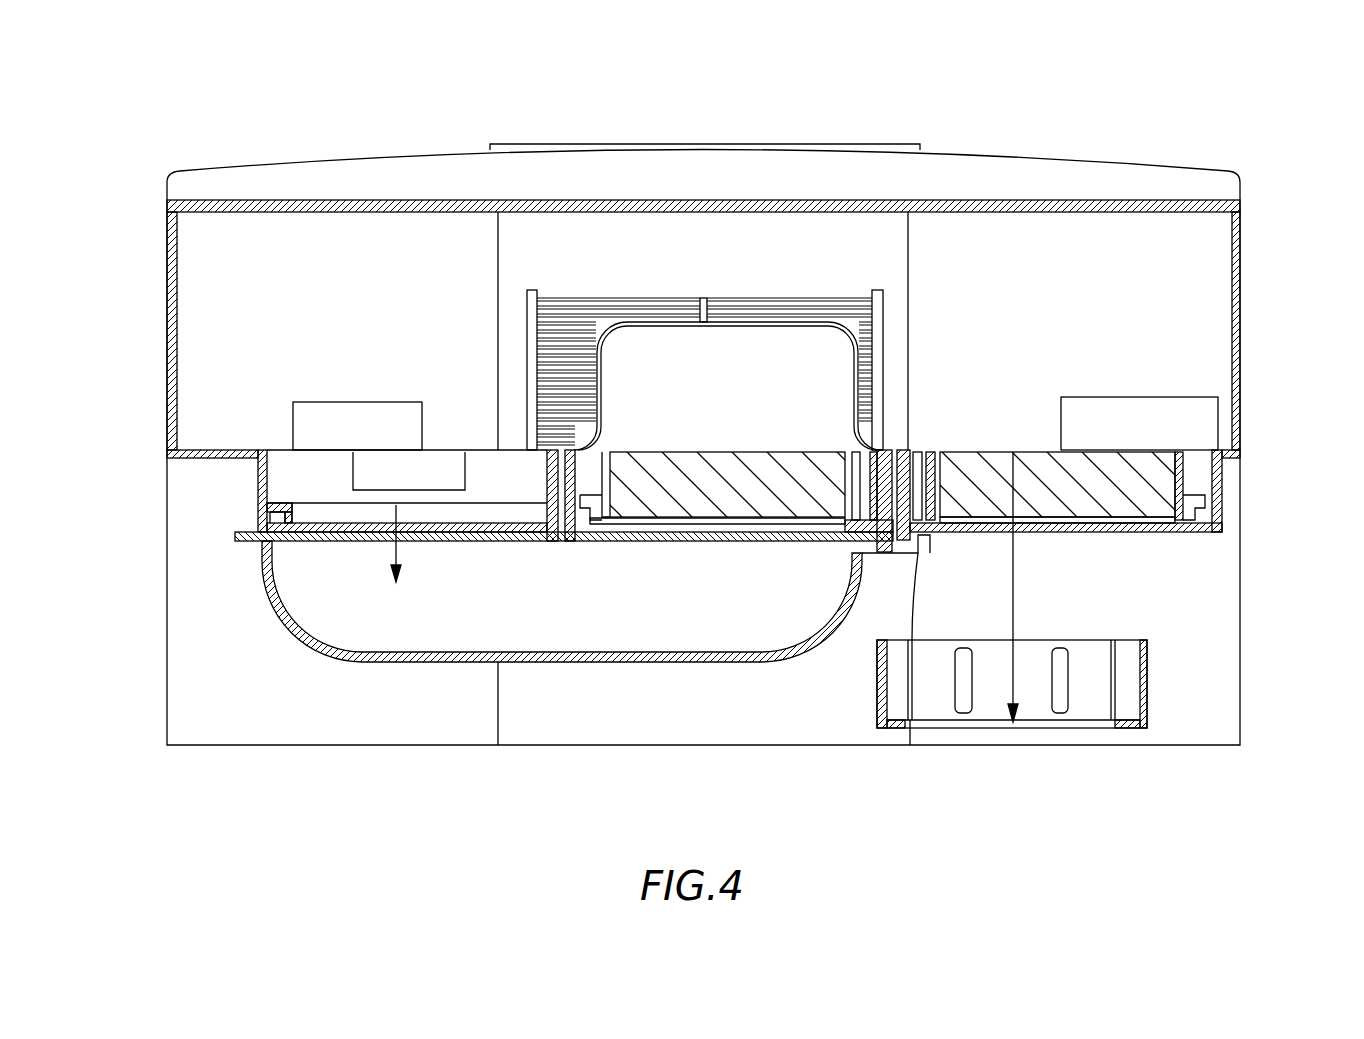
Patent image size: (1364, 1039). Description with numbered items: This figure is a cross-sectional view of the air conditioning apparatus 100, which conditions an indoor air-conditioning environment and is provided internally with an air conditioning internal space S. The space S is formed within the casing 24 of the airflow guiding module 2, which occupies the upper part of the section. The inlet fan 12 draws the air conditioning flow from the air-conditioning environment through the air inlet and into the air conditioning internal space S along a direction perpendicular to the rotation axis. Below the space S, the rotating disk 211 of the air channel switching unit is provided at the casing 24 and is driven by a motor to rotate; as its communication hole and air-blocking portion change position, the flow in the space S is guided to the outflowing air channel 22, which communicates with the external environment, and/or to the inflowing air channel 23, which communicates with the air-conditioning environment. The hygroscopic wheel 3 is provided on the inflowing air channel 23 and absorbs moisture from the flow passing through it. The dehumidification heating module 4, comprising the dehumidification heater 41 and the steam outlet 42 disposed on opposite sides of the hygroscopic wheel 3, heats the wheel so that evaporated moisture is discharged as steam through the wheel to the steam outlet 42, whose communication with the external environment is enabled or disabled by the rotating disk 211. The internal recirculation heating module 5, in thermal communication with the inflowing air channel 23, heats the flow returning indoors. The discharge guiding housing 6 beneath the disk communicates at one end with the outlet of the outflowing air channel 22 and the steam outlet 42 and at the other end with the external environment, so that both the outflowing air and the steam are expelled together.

The air conditioning apparatus 100 is at (1283, 118).
The air conditioning internal space S is at (252, 291).
The casing 24 is at (170, 330).
The airflow guiding module 2 is at (254, 487).
The rotating disk 211 is at (247, 541).
The outflowing air channel 22 is at (396, 555).
The inlet fan 12 is at (560, 315).
The dehumidification heating module 4 is at (800, 247).
The steam outlet 42 is at (718, 530).
The dehumidification heater 41 is at (780, 340).
The hygroscopic wheel 3 is at (1168, 486).
The inflowing air channel 23 is at (1013, 592).
The internal recirculation heating module 5 is at (1143, 685).
The discharge guiding housing 6 is at (597, 655).